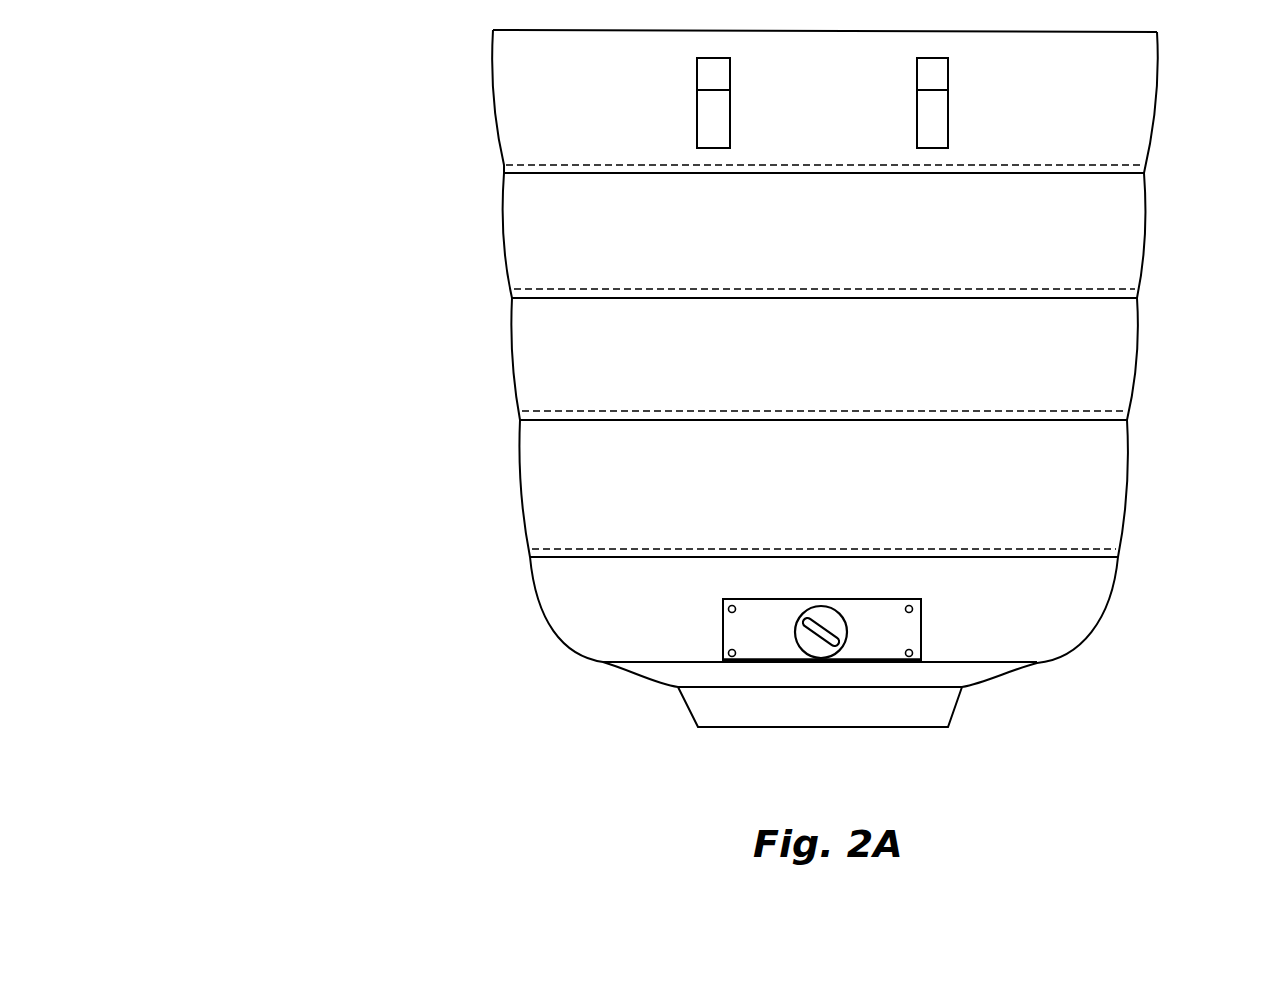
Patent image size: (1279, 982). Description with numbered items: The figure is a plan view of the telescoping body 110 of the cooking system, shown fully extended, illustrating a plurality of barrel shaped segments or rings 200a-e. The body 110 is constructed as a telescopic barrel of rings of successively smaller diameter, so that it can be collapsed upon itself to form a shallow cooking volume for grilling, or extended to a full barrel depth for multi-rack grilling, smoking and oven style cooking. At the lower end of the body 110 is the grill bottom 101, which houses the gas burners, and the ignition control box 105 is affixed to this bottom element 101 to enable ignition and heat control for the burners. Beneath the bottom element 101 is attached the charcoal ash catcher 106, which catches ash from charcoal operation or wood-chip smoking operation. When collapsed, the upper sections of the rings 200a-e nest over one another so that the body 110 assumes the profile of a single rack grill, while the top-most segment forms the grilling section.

The grill bottom 101 is at (1105, 622).
The gas control system 105 is at (722, 640).
The charcoal ash catcher 106 is at (807, 727).
The telescoping body 110 is at (1173, 323).
The barrel shaped segments or rings 200a-e is at (446, 61).